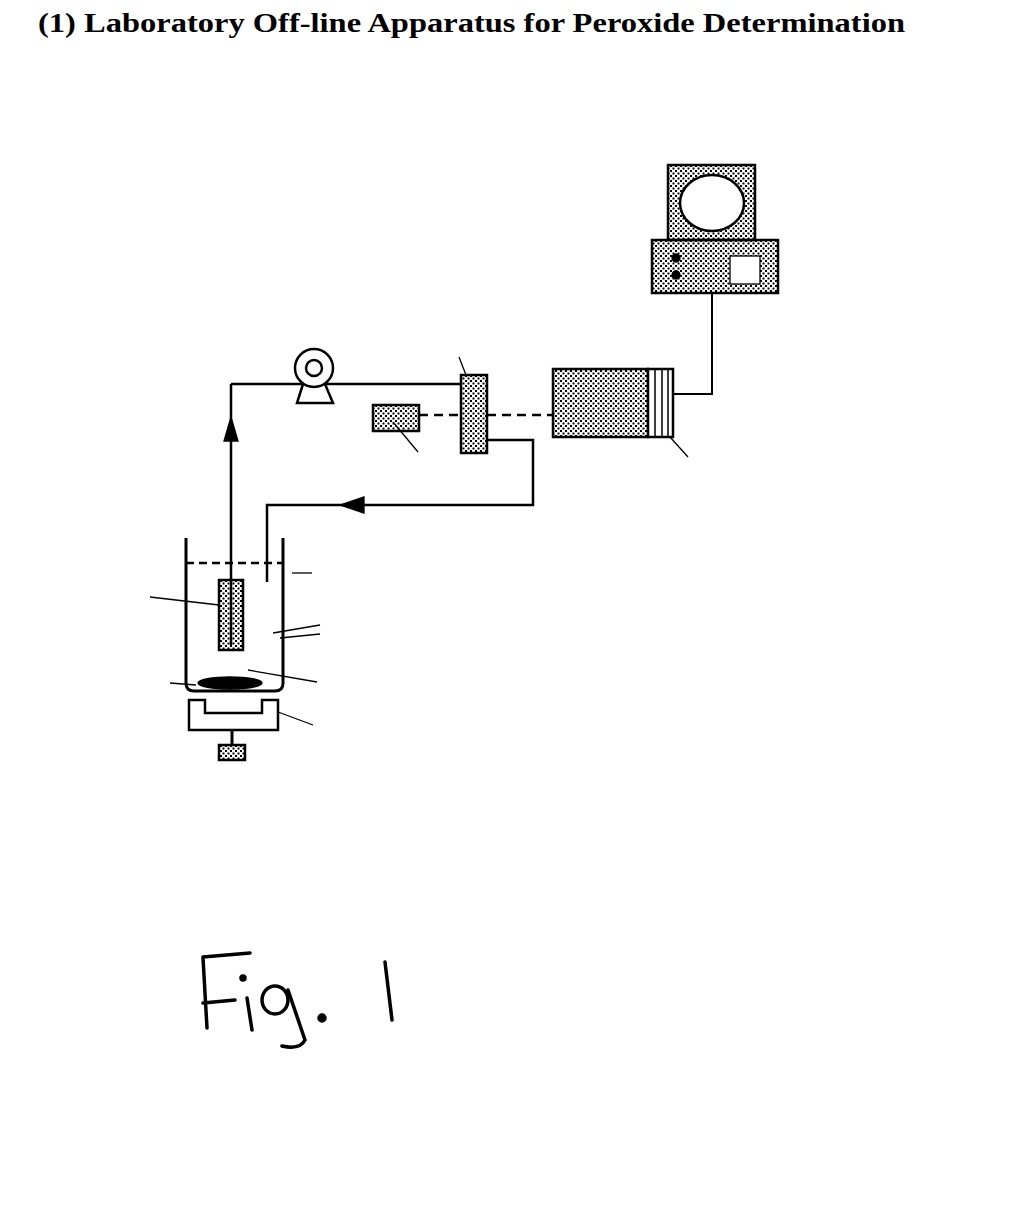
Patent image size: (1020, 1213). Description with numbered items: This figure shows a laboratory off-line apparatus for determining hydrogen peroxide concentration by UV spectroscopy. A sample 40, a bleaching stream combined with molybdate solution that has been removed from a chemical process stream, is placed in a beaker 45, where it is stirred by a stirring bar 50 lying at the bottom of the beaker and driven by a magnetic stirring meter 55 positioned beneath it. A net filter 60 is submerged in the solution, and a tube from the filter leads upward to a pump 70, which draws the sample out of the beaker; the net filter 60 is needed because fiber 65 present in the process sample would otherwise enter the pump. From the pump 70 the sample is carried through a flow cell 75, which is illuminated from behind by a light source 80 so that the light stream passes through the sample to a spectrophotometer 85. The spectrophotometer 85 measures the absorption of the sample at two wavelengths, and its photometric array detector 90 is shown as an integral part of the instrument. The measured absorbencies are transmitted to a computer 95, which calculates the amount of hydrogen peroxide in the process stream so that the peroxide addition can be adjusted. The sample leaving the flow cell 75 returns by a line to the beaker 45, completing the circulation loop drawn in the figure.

The sample 40 is at (245, 667).
The beaker 45 is at (283, 562).
The stirring bar 50 is at (192, 690).
The magnetic stirring meter 55 is at (260, 735).
The net filter 60 is at (219, 592).
The fiber 65 is at (321, 634).
The pump 70 is at (298, 358).
The flow cell 75 is at (470, 375).
The light source 80 is at (373, 420).
The spectrophotometer 85 is at (597, 437).
The photometric array detector 90 is at (676, 418).
The computer 95 is at (757, 190).